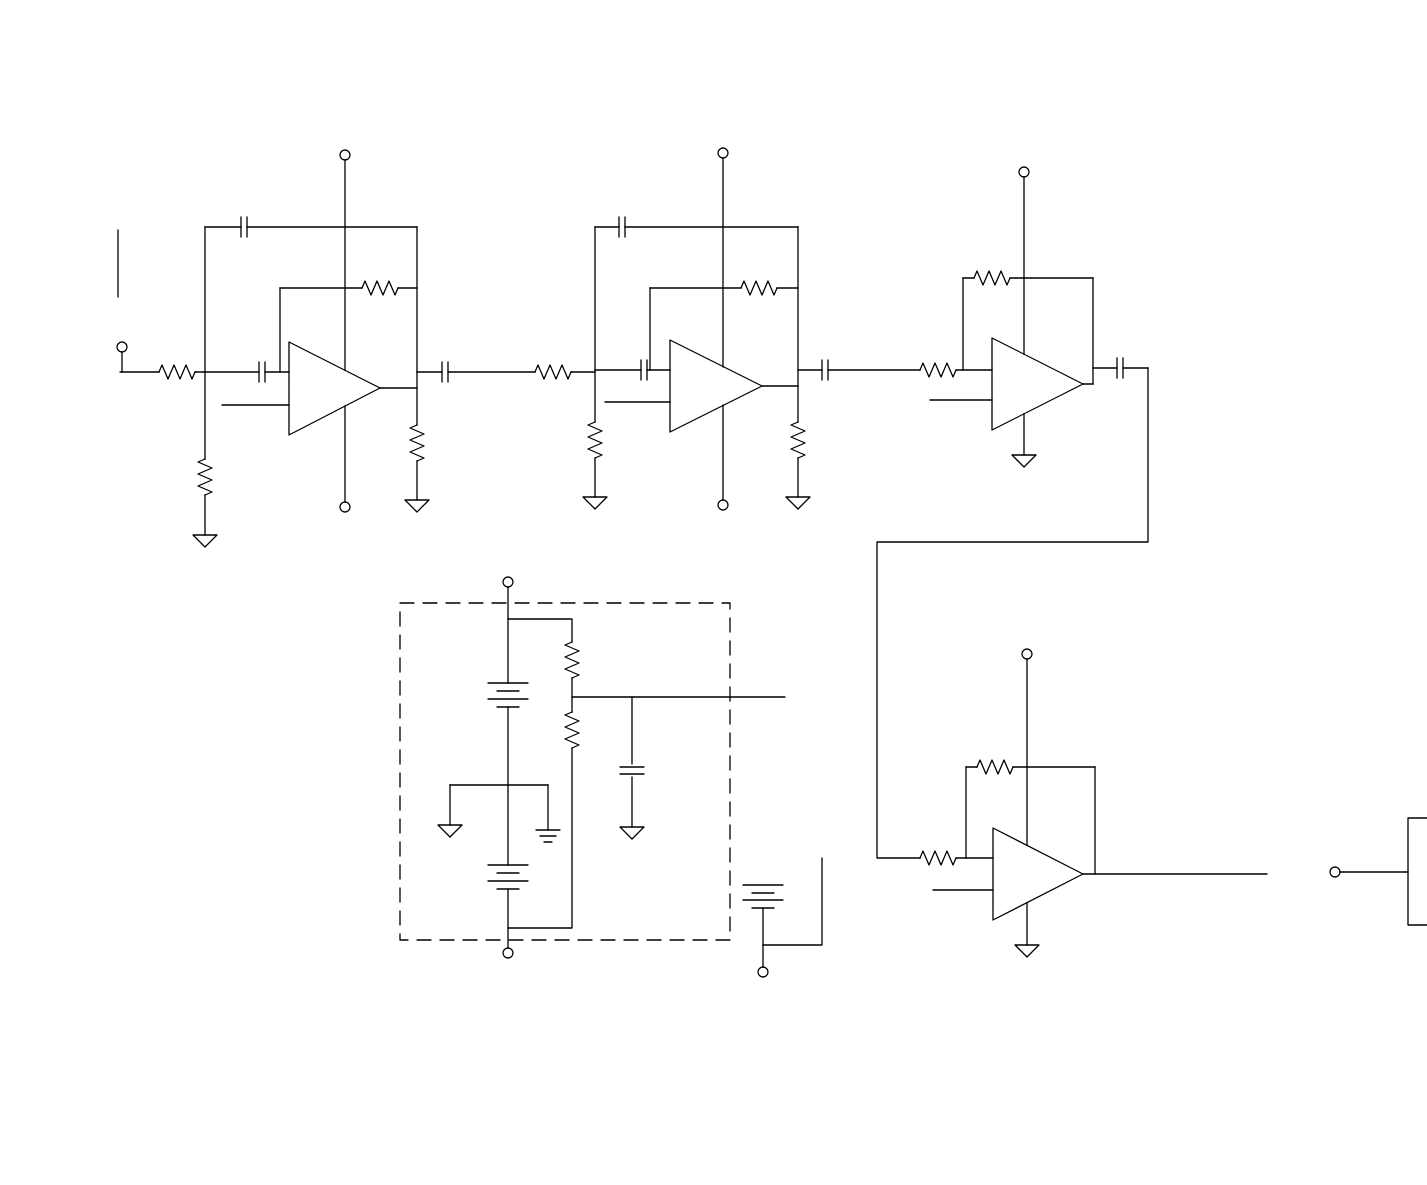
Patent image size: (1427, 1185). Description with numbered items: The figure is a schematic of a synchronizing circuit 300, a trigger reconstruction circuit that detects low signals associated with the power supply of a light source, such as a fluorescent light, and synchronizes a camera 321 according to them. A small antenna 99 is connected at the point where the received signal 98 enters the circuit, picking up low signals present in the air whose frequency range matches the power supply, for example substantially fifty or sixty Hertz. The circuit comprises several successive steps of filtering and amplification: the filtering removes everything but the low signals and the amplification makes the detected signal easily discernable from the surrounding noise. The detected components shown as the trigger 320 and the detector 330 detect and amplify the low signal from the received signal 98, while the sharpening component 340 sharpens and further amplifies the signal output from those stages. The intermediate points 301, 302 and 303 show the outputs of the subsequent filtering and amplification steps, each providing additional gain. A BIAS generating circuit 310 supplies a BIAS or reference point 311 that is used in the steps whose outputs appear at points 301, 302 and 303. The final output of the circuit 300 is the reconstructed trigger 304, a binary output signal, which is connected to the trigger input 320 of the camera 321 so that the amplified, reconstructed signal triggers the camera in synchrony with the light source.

The antenna 99 is at (118, 226).
The received signal 98 is at (118, 358).
The synchronizing circuit 300 is at (903, 206).
The intermediate point 301 is at (515, 370).
The intermediate point 302 is at (890, 368).
The intermediate point 303 is at (1150, 484).
The reconstructed trigger 304 is at (1210, 872).
The BIAS generating circuit 310 is at (400, 788).
The BIAS reference point 311 is at (773, 697).
The trigger 320 is at (483, 545).
The camera 321 is at (1411, 818).
The detector 330 is at (850, 545).
The sharpening component 340 is at (1137, 633).